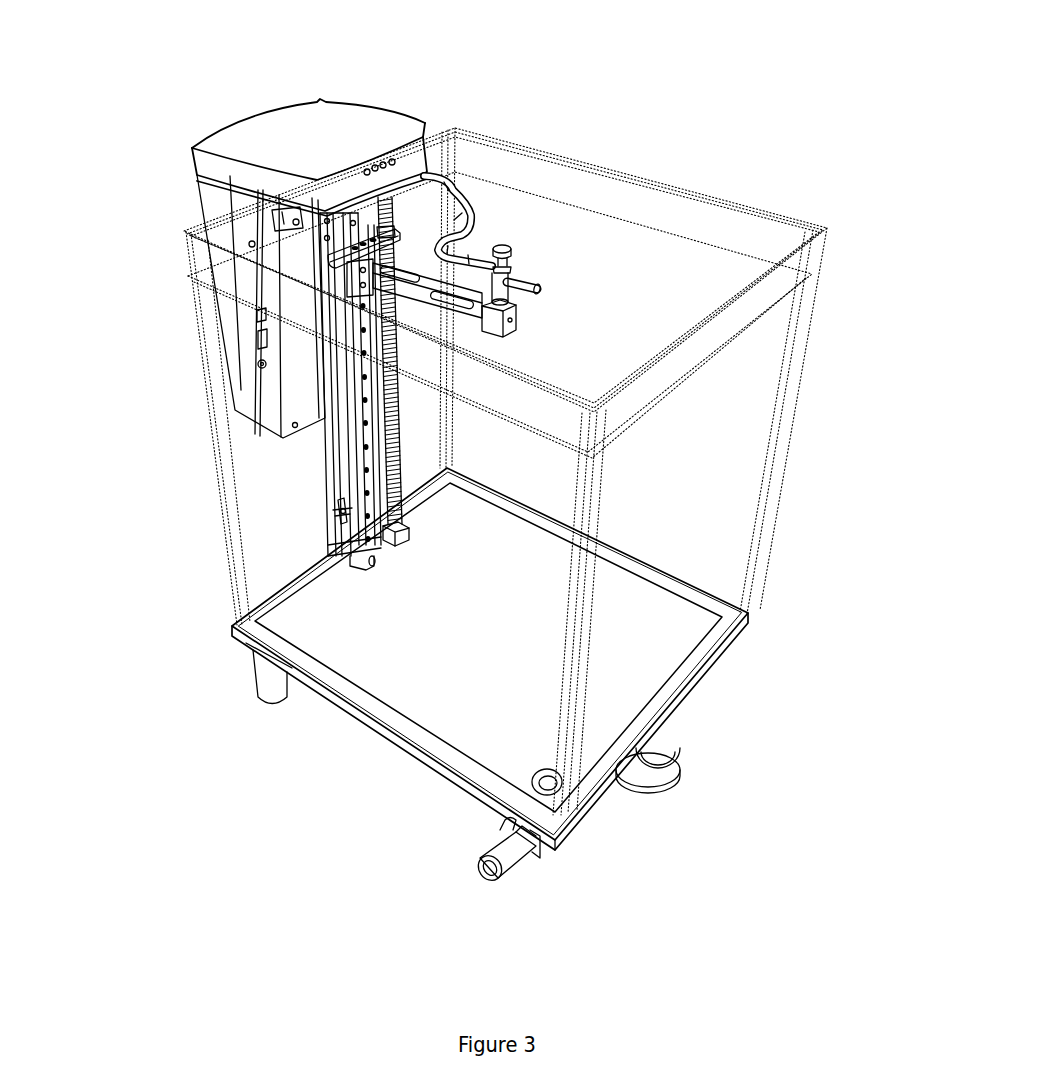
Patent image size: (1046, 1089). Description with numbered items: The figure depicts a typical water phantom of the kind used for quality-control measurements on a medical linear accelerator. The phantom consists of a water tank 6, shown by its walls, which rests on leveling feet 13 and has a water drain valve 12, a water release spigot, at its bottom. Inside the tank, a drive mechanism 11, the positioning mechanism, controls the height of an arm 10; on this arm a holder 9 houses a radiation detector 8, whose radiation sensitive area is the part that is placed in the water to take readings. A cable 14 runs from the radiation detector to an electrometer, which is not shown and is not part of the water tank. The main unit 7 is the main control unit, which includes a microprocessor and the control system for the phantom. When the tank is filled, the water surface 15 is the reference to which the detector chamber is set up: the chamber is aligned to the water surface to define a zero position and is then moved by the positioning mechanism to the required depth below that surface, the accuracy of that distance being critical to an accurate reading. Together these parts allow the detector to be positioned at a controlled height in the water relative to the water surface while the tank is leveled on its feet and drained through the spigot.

The water tank 6 is at (788, 485).
The main unit 7 is at (178, 145).
The radiation detector 8 is at (549, 279).
The holder 9 is at (512, 231).
The arm 10 is at (430, 303).
The drive mechanism 11 is at (326, 518).
The water drain valve 12 is at (468, 849).
The leveling feet 13 is at (692, 770).
The cable of radiation detector 14 is at (468, 186).
The water surface 15 is at (739, 246).